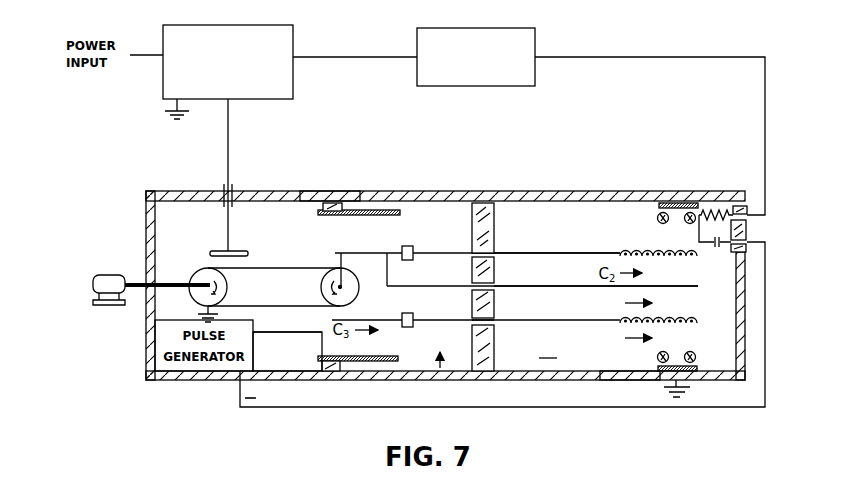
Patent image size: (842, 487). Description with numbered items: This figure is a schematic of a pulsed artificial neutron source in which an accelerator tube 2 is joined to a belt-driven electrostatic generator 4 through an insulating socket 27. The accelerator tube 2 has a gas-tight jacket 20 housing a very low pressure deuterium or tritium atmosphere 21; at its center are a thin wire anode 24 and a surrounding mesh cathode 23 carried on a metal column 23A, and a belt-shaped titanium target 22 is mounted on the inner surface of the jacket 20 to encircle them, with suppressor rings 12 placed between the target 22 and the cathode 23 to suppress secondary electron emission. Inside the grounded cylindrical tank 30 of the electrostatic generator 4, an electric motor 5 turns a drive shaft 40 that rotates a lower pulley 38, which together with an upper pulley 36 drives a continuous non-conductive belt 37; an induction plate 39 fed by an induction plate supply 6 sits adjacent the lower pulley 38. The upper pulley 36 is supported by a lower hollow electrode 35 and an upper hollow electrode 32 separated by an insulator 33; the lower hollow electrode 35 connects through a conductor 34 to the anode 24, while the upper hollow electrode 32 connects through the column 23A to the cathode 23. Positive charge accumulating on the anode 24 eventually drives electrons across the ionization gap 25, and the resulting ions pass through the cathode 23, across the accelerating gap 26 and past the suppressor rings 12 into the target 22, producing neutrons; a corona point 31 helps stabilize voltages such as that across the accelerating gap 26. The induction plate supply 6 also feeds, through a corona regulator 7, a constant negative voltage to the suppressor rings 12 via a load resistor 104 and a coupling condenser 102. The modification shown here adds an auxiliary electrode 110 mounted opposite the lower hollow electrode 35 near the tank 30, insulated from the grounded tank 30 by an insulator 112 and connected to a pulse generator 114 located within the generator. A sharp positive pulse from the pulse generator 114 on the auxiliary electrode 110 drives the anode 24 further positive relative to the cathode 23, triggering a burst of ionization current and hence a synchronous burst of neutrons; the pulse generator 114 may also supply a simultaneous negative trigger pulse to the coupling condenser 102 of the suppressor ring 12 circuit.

The accelerator tube 2 is at (531, 191).
The electrostatic generator 4 is at (327, 191).
The electric motor 5 is at (121, 272).
The induction plate supply 6 is at (276, 25).
The corona regulator 7 is at (510, 28).
The suppressor rings 12 is at (657, 221).
The gas-tight jacket 20 is at (626, 381).
The atmosphere 21 is at (547, 350).
The belt-shaped target 22 is at (657, 208).
The cathode 23 is at (698, 257).
The column 23A is at (580, 253).
The anode 24 is at (668, 286).
The ionization gap 25 is at (627, 304).
The accelerating gap 26 is at (627, 339).
The insulating socket 27 is at (494, 213).
The cylindrical tank 30 is at (265, 371).
The corona point 31 is at (439, 357).
The upper hollow electrode 32 is at (470, 257).
The insulator 33 is at (407, 246).
The conductor 34 is at (387, 283).
The lower hollow electrode 35 is at (369, 253).
The upper pulley 36 is at (321, 287).
The belt 37 is at (268, 268).
The lower pulley 38 is at (227, 287).
The induction plate 39 is at (233, 251).
The drive shaft 40 is at (137, 290).
The coupling condenser 102 is at (712, 246).
The load resistor 104 is at (706, 224).
The auxiliary electrode 110 is at (362, 216).
The insulator 112 is at (322, 206).
The pulse generator 114 is at (255, 332).